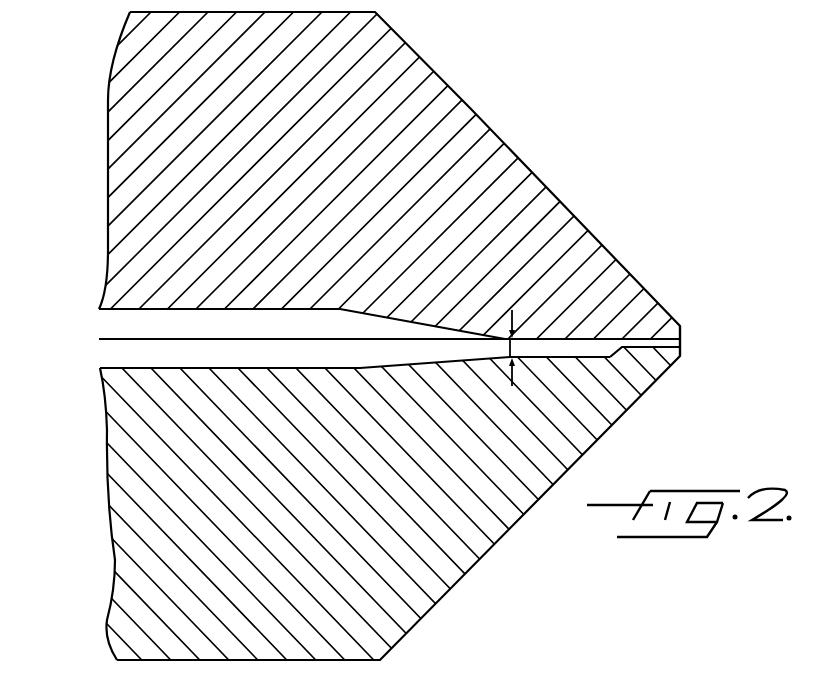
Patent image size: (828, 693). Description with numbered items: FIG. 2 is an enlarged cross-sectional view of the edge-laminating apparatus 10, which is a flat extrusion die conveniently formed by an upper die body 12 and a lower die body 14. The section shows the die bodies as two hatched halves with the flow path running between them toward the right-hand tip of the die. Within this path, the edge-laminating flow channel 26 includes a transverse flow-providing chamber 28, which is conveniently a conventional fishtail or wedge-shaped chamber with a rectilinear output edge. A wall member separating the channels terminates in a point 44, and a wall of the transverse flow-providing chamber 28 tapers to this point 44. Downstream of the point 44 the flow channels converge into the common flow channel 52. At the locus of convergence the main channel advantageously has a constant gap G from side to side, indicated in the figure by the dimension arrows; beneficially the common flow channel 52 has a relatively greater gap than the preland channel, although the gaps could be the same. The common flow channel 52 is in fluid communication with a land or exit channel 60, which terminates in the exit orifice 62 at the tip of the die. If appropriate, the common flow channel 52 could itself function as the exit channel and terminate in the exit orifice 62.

The edge-laminating apparatus 10 is at (495, 100).
The upper die body 12 is at (128, 72).
The lower die body 14 is at (508, 528).
The edge-laminating flow channel 26 is at (257, 318).
The transverse flow-providing chamber 28 is at (440, 352).
The point 44 is at (498, 337).
The gap G is at (518, 340).
The common flow channel 52 is at (566, 348).
The exit channel 60 is at (647, 348).
The exit orifice 62 is at (682, 338).